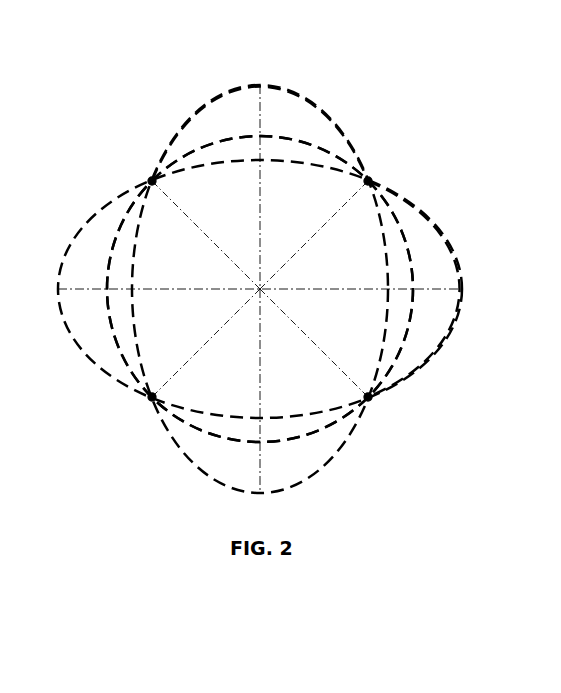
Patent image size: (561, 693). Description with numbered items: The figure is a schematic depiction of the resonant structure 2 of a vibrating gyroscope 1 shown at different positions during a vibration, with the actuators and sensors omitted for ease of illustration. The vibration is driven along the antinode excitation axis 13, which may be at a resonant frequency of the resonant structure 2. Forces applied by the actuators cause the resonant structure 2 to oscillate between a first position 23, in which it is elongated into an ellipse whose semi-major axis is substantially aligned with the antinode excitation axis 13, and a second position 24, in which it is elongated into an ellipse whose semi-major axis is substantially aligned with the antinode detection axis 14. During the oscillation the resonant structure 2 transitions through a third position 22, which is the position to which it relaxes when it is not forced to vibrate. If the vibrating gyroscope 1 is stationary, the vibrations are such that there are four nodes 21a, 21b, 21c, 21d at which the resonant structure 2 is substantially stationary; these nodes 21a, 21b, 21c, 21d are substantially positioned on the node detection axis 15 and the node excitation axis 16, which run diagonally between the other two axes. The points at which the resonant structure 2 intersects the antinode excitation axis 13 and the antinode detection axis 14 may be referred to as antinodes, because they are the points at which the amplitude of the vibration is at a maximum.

The vibrating gyroscope 1 is at (275, 282).
The resonant structure 2 is at (125, 215).
The antinode excitation axis 13 is at (260, 118).
The antinode detection axis 14 is at (407, 291).
The node detection axis 15 is at (330, 220).
The node excitation axis 16 is at (342, 370).
The node 21a is at (148, 178).
The node 21b is at (150, 400).
The node 21c is at (372, 398).
The node 21d is at (372, 180).
The third position 22 is at (352, 157).
The first position 23 is at (345, 130).
The second position 24 is at (447, 237).